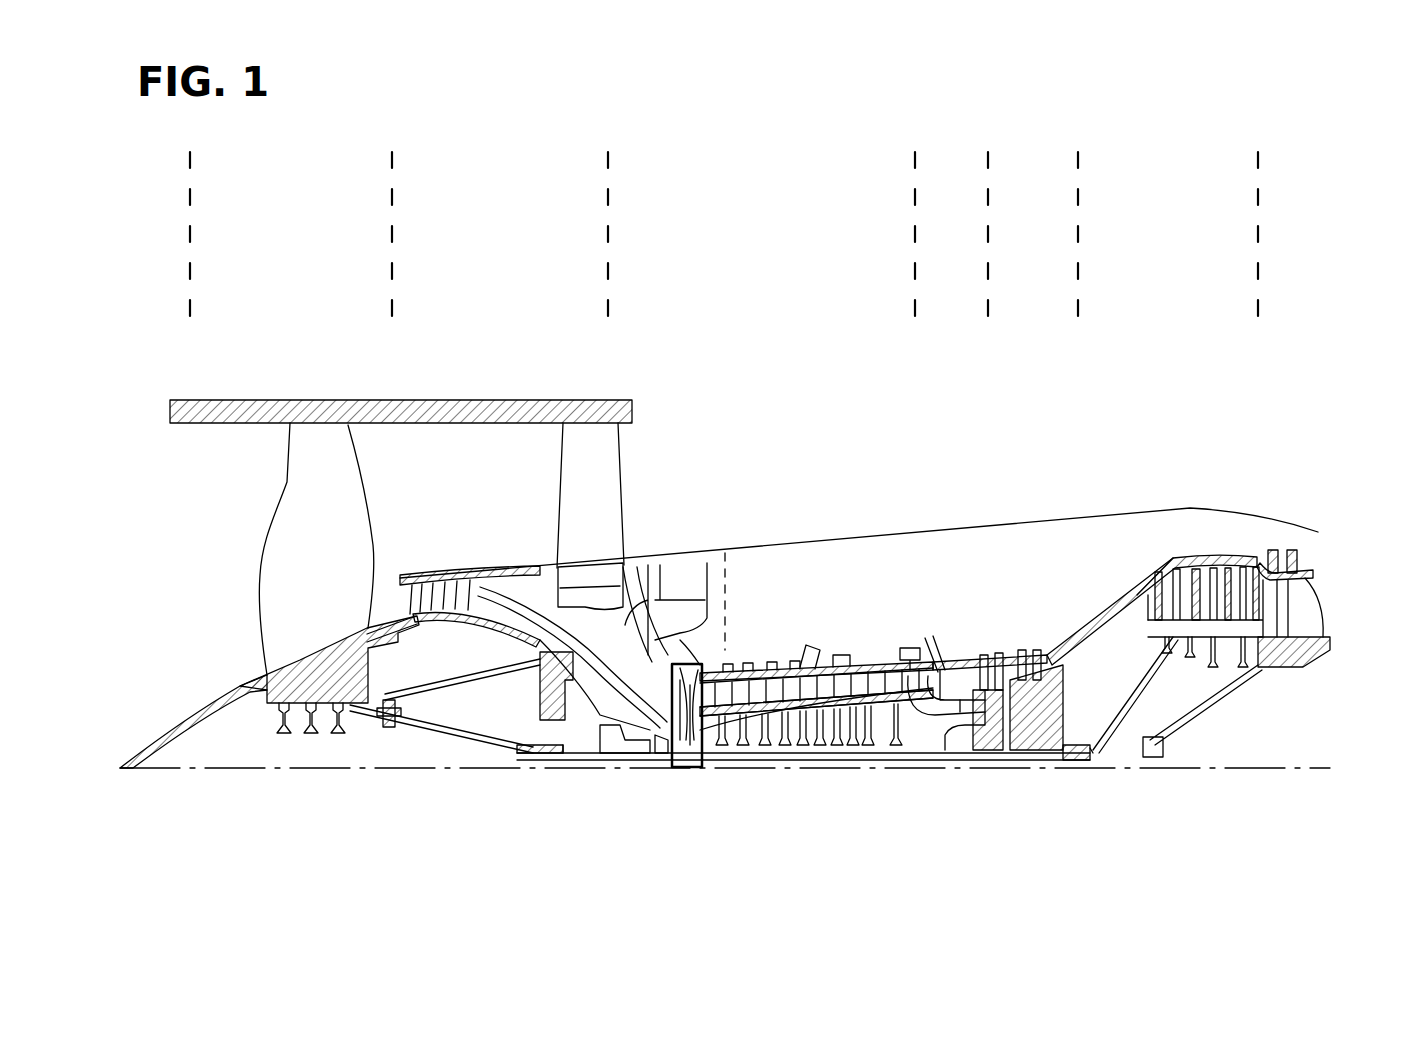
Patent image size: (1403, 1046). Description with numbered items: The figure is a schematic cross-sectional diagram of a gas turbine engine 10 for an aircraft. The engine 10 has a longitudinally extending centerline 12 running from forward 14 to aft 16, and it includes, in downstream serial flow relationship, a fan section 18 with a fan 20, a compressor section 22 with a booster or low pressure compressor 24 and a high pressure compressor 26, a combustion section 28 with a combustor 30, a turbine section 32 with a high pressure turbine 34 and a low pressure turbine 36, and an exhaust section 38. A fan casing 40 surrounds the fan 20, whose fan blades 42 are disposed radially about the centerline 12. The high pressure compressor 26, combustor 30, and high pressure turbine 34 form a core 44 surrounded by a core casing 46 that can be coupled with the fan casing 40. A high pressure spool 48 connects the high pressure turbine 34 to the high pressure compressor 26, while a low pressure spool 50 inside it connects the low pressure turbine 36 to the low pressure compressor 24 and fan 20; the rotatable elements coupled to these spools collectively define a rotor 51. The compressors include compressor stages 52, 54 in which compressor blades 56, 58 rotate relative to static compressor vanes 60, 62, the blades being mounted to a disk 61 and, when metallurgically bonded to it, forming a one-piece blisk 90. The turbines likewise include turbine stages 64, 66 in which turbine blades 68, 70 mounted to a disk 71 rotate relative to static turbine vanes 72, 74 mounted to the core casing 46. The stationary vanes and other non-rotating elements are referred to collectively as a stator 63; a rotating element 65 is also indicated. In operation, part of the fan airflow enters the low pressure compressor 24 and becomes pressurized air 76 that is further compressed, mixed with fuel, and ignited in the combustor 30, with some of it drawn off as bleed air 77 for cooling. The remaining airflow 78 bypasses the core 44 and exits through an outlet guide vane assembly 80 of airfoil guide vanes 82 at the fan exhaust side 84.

The gas turbine engine 10 is at (1292, 270).
The centerline 12 is at (290, 770).
The forward 14 is at (160, 534).
The aft 16 is at (1377, 606).
The fan section 18 is at (386, 232).
The fan 20 is at (228, 612).
The compressor section 22 is at (915, 150).
The low pressure compressor 24 is at (398, 232).
The high pressure compressor 26 is at (909, 232).
The combustion section 28 is at (982, 232).
The combustor 30 is at (950, 680).
The turbine section 32 is at (1258, 150).
The high pressure turbine 34 is at (1072, 232).
The low pressure turbine 36 is at (1252, 232).
The exhaust section 38 is at (1332, 578).
The fan casing 40 is at (410, 402).
The fan blades 42 is at (345, 480).
The core 44 is at (895, 578).
The core casing 46 is at (1118, 608).
The high pressure spool 48 is at (912, 762).
The low pressure spool 50 is at (543, 770).
The rotor 51 is at (745, 770).
The compressor stages 52 is at (463, 566).
The compressor stages 54 is at (806, 658).
The compressor blades 56 is at (446, 568).
The compressor blades 58 is at (705, 680).
The static compressor vanes 60 is at (410, 584).
The disk 61 is at (425, 634).
The static compressor vanes 62 is at (700, 668).
The stator 63 is at (662, 762).
The turbine stages 64 is at (1014, 622).
The compressor rotor 65 is at (828, 750).
The turbine stages 66 is at (1224, 541).
The turbine blades 68 is at (1026, 635).
The turbine blades 70 is at (1245, 570).
The disk 71 is at (1005, 700).
The static turbine vanes 72 is at (983, 655).
The static turbine vanes 74 is at (1228, 570).
The pressurized air 76 is at (614, 684).
The bleed air 77 is at (772, 672).
The airflow 78 is at (688, 472).
The outlet guide vane assembly 80 is at (643, 515).
The airfoil guide vanes 82 is at (568, 510).
The fan exhaust side 84 is at (667, 430).
The blisk 90 is at (681, 768).